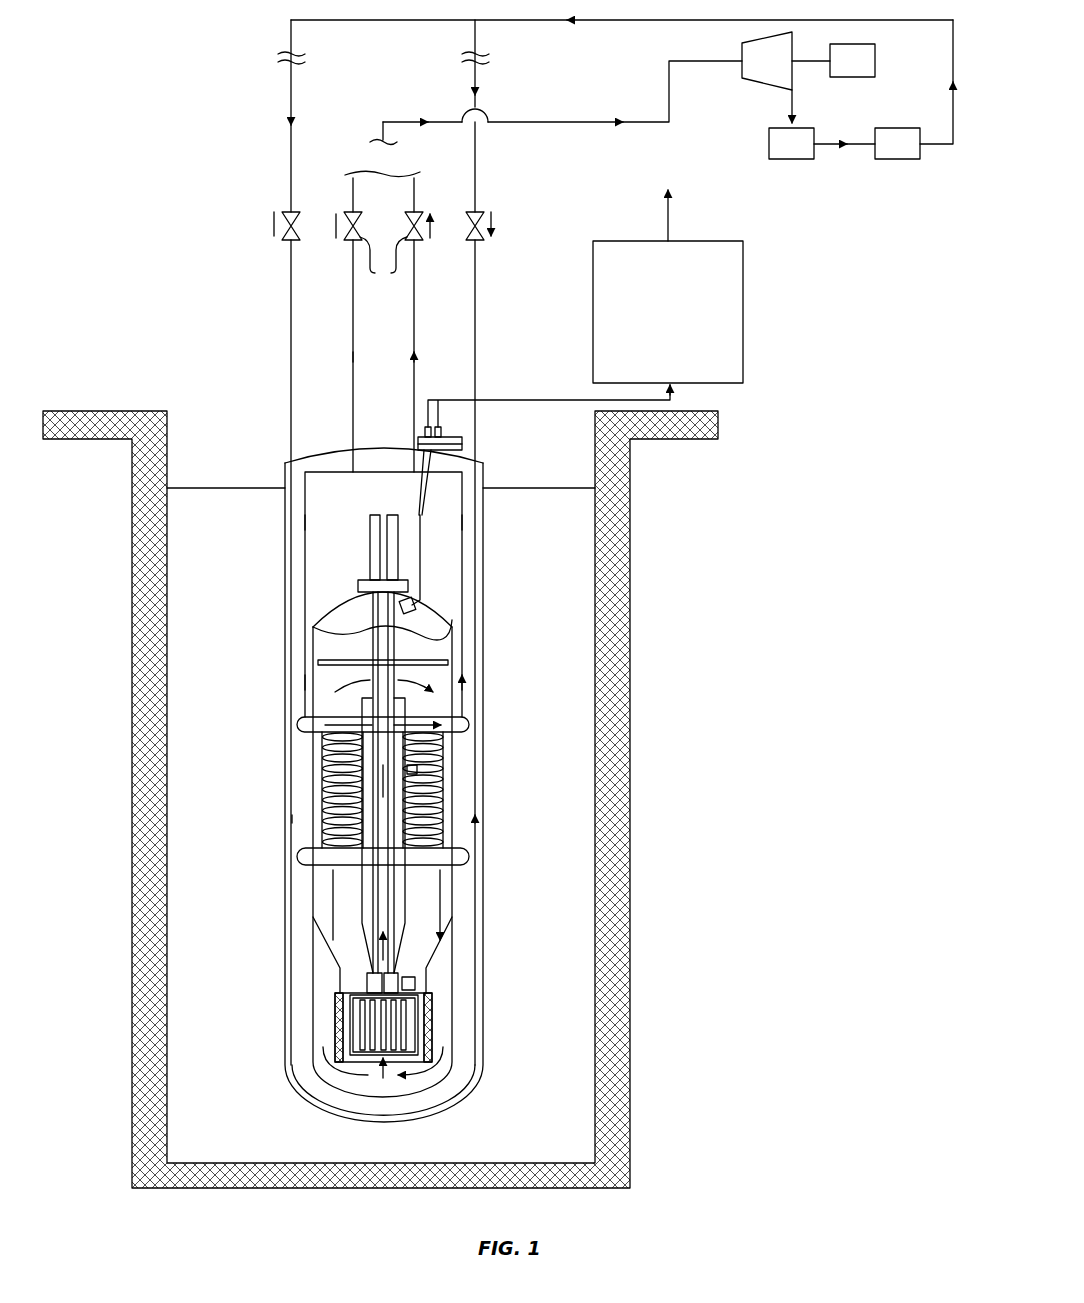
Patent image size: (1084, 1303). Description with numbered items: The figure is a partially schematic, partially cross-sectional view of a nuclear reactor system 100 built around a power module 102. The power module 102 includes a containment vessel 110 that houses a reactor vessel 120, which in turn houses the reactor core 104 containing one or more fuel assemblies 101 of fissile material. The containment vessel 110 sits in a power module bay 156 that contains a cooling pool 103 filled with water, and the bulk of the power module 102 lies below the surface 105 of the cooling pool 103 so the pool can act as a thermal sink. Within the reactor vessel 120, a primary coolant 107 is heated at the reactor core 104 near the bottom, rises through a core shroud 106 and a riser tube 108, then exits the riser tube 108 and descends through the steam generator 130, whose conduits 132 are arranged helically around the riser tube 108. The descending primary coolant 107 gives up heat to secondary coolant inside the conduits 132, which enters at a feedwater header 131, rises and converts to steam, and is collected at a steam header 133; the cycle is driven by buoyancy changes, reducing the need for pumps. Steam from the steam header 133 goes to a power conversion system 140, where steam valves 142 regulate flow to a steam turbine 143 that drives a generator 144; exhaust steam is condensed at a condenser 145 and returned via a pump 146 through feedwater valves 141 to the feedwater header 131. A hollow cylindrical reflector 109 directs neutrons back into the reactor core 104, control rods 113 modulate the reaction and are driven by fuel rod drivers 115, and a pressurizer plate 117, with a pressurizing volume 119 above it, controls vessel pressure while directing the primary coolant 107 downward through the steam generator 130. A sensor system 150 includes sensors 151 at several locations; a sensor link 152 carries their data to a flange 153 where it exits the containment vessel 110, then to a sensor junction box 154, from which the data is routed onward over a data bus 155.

The nuclear reactor system 100 is at (200, 146).
The fuel assemblies 101 is at (420, 1030).
The power module 102 is at (160, 248).
The cooling pool 103 is at (195, 545).
The reactor core 104 is at (385, 1065).
The surface 105 is at (575, 488).
The core shroud 106 is at (335, 985).
The primary coolant 107 is at (433, 1090).
The riser tube 108 is at (362, 907).
The hollow cylindrical reflector 109 is at (335, 1040).
The containment vessel 110 is at (290, 462).
The control rods 113 is at (432, 1003).
The fuel rod drivers 115 is at (372, 512).
The pressurizer plate 117 is at (318, 660).
The pressurizing volume 119 is at (345, 607).
The reactor vessel 120 is at (452, 625).
The steam generator 130 is at (395, 835).
The feedwater header 131 is at (469, 855).
The conduits 132 is at (443, 790).
The steam header 133 is at (469, 730).
The power conversion system 140 is at (258, 85).
The feedwater valves 141 is at (285, 212).
The steam valves 142 is at (383, 321).
The steam turbine 143 is at (745, 80).
The generator 144 is at (852, 77).
The condenser 145 is at (795, 159).
The pump 146 is at (900, 159).
The sensor system 150 is at (535, 555).
The sensors 151 is at (415, 605).
The sensor link 152 is at (420, 535).
The flange 153 is at (462, 441).
The sensor junction box 154 is at (743, 312).
The data bus 155 is at (669, 217).
The power module bay 156 is at (170, 378).